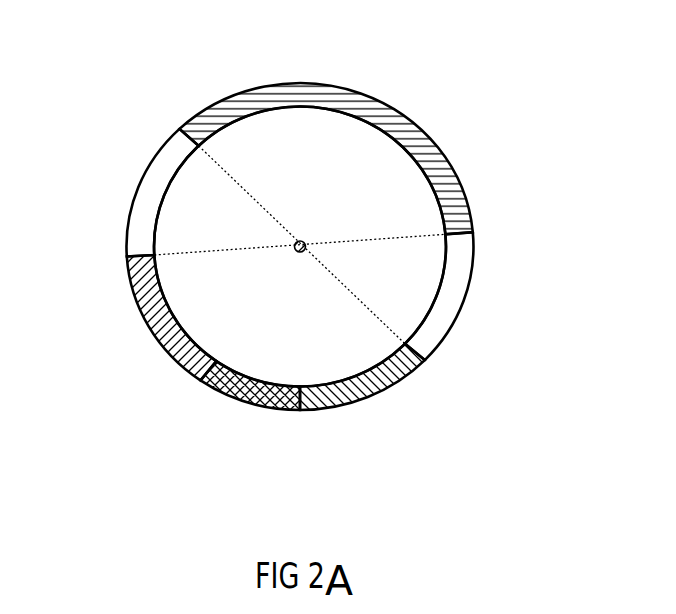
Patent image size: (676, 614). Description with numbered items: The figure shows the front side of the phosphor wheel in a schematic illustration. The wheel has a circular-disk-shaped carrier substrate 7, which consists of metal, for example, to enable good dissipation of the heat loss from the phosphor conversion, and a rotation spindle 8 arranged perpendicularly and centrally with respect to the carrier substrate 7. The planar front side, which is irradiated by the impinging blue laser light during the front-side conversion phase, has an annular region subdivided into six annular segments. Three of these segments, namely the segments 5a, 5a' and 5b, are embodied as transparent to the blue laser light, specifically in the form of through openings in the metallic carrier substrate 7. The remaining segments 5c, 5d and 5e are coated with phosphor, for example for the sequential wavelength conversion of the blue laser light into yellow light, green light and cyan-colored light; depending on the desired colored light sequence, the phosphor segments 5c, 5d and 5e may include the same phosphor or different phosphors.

The annular segment 5a is at (114, 193).
The annular segment 5b is at (381, 99).
The annular segment 5a' is at (498, 297).
The phosphor segment 5c is at (242, 402).
The phosphor segment 5d is at (359, 399).
The phosphor segment 5e is at (149, 329).
The carrier substrate 7 is at (270, 319).
The rotation spindle 8 is at (299, 244).